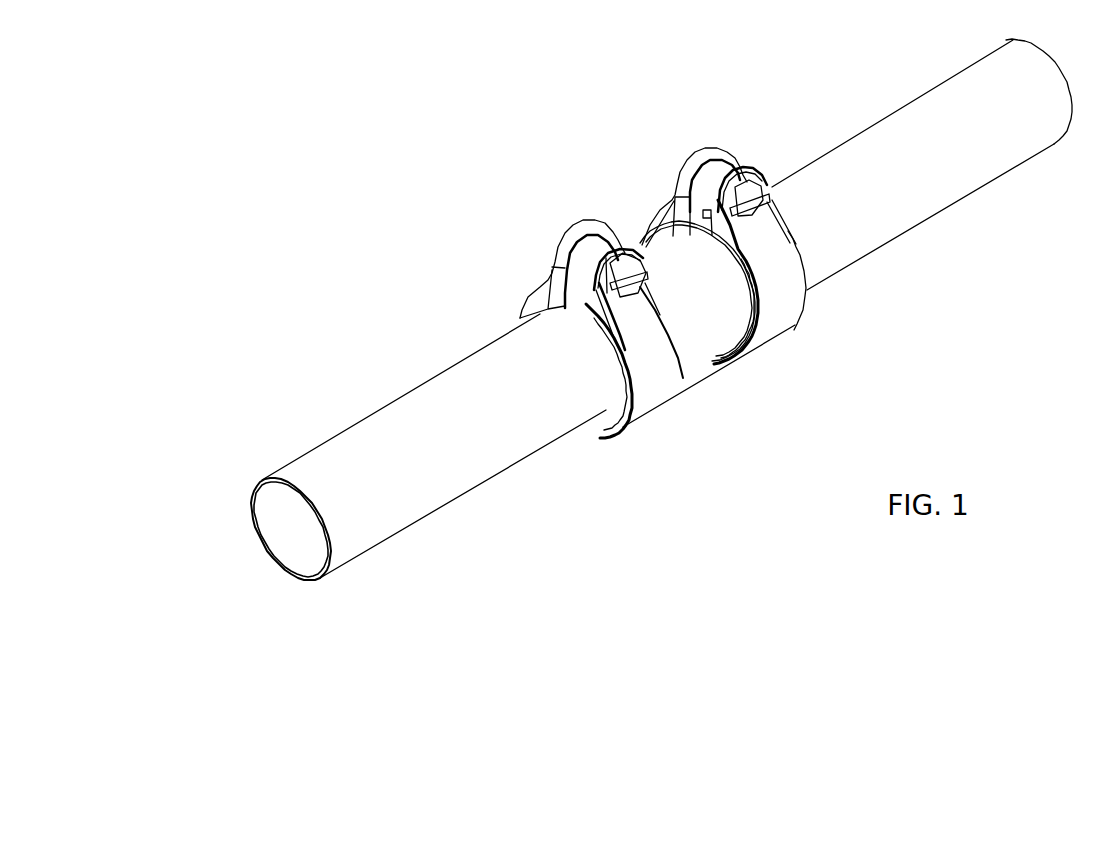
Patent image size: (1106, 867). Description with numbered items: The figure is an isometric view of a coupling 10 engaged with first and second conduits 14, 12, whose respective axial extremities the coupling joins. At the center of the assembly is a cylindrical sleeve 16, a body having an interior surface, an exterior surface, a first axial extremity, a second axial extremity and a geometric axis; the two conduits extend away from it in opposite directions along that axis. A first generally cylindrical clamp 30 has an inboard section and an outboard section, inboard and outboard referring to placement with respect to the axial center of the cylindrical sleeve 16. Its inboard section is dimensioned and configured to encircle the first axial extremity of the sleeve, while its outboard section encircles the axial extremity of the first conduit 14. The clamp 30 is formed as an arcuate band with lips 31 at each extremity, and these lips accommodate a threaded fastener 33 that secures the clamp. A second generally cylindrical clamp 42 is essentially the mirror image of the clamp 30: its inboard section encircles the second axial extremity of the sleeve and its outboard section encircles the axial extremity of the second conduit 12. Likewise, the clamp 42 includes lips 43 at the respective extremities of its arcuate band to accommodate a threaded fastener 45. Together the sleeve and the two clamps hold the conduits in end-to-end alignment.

The coupling 10 is at (628, 187).
The second conduit 12 is at (342, 437).
The first conduit 14 is at (893, 108).
The cylindrical sleeve 16 is at (707, 363).
The first generally cylindrical clamp 30 is at (865, 200).
The lips 31 is at (713, 147).
The threaded fastener 33 is at (777, 188).
The second generally cylindrical clamp 42 is at (472, 369).
The lips 43 is at (557, 236).
The threaded fastener 45 is at (623, 295).